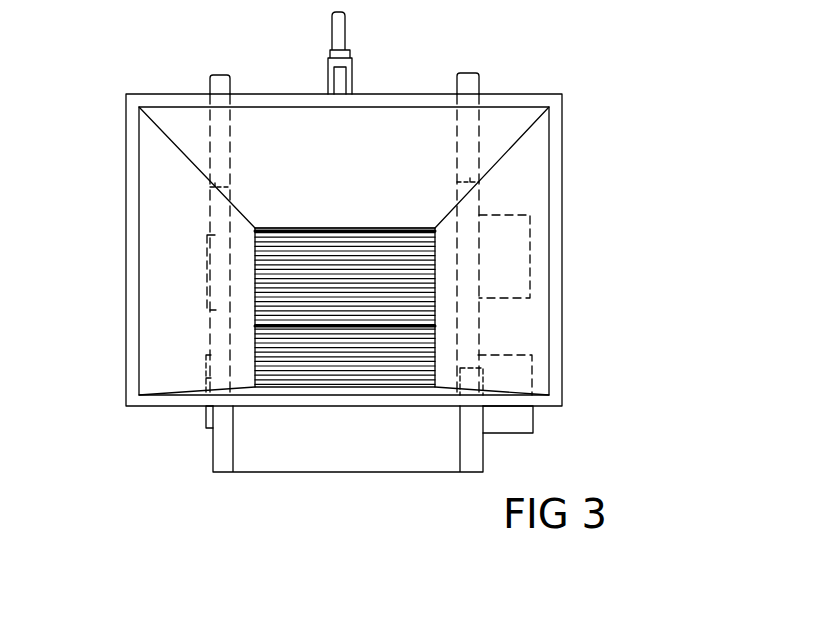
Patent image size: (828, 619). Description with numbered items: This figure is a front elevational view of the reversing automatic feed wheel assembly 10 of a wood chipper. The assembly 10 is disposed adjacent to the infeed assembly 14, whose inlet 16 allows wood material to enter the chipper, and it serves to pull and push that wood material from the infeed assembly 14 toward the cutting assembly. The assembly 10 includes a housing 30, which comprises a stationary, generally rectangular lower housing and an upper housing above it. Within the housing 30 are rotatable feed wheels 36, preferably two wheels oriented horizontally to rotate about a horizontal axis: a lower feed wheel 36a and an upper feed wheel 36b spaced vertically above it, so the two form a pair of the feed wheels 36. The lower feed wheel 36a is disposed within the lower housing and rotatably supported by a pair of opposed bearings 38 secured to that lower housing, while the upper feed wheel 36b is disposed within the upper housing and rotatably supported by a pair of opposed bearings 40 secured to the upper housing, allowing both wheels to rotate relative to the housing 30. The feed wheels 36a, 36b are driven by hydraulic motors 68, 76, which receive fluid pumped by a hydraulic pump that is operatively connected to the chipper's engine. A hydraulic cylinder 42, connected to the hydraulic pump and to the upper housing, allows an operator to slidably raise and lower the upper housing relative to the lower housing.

The reversing automatic feed wheel assembly 10 is at (400, 279).
The infeed assembly 14 is at (565, 244).
The inlet 16 is at (534, 173).
The housing 30 is at (390, 473).
The feed wheels 36 is at (255, 342).
The lower feed wheel 36a is at (293, 372).
The upper feed wheel 36b is at (288, 236).
The bearings 38 is at (207, 235).
The bearings 40 is at (208, 418).
The hydraulic cylinder 42 is at (342, 54).
The hydraulic motor 68 is at (522, 418).
The hydraulic motor 76 is at (518, 275).